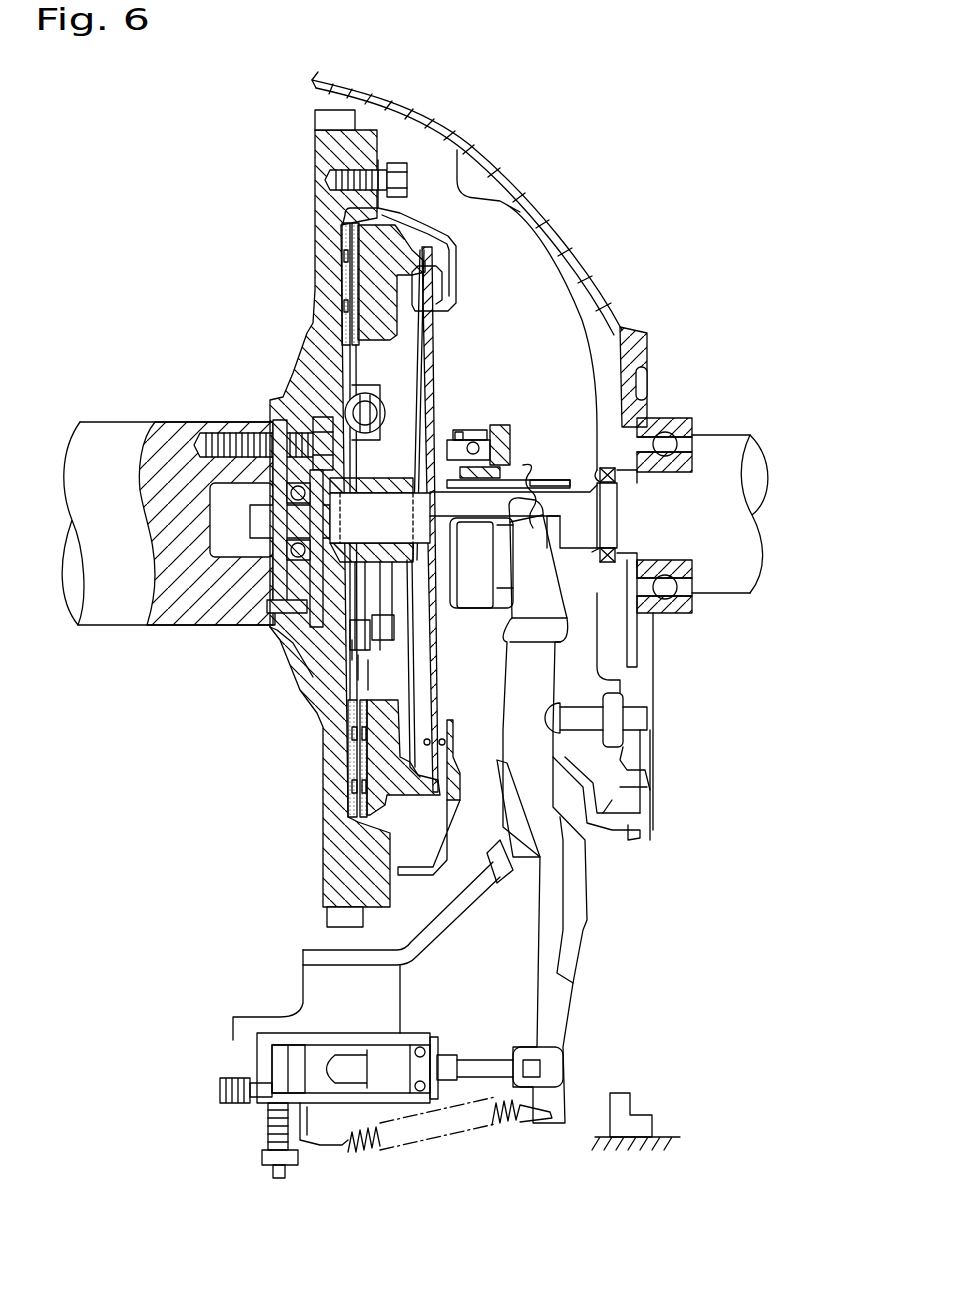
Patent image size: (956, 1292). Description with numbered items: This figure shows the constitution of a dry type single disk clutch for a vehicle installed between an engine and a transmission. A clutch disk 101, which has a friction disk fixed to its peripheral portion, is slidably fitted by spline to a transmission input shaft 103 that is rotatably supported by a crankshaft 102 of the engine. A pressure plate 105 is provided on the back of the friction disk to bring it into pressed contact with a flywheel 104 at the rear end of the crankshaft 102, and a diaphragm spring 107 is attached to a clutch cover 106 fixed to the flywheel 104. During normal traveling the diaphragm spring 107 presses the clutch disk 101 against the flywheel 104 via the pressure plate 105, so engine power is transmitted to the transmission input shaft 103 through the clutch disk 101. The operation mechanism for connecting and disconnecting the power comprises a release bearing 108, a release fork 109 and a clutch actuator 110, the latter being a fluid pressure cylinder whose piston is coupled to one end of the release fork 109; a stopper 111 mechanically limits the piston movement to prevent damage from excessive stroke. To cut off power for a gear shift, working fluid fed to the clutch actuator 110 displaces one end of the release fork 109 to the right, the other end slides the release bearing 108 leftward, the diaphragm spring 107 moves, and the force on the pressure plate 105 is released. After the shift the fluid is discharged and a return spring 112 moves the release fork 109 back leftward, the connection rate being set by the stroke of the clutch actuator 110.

The clutch disk 101 is at (320, 658).
The crankshaft 102 is at (122, 432).
The transmission input shaft 103 is at (565, 500).
The flywheel 104 is at (330, 255).
The pressure plate 105 is at (378, 755).
The clutch cover 106 is at (443, 292).
The diaphragm spring 107 is at (435, 345).
The release bearing 108 is at (478, 428).
The release fork 109 is at (558, 906).
The clutch actuator 110 is at (338, 1037).
The stopper 111 is at (630, 1093).
The return spring 112 is at (438, 1155).